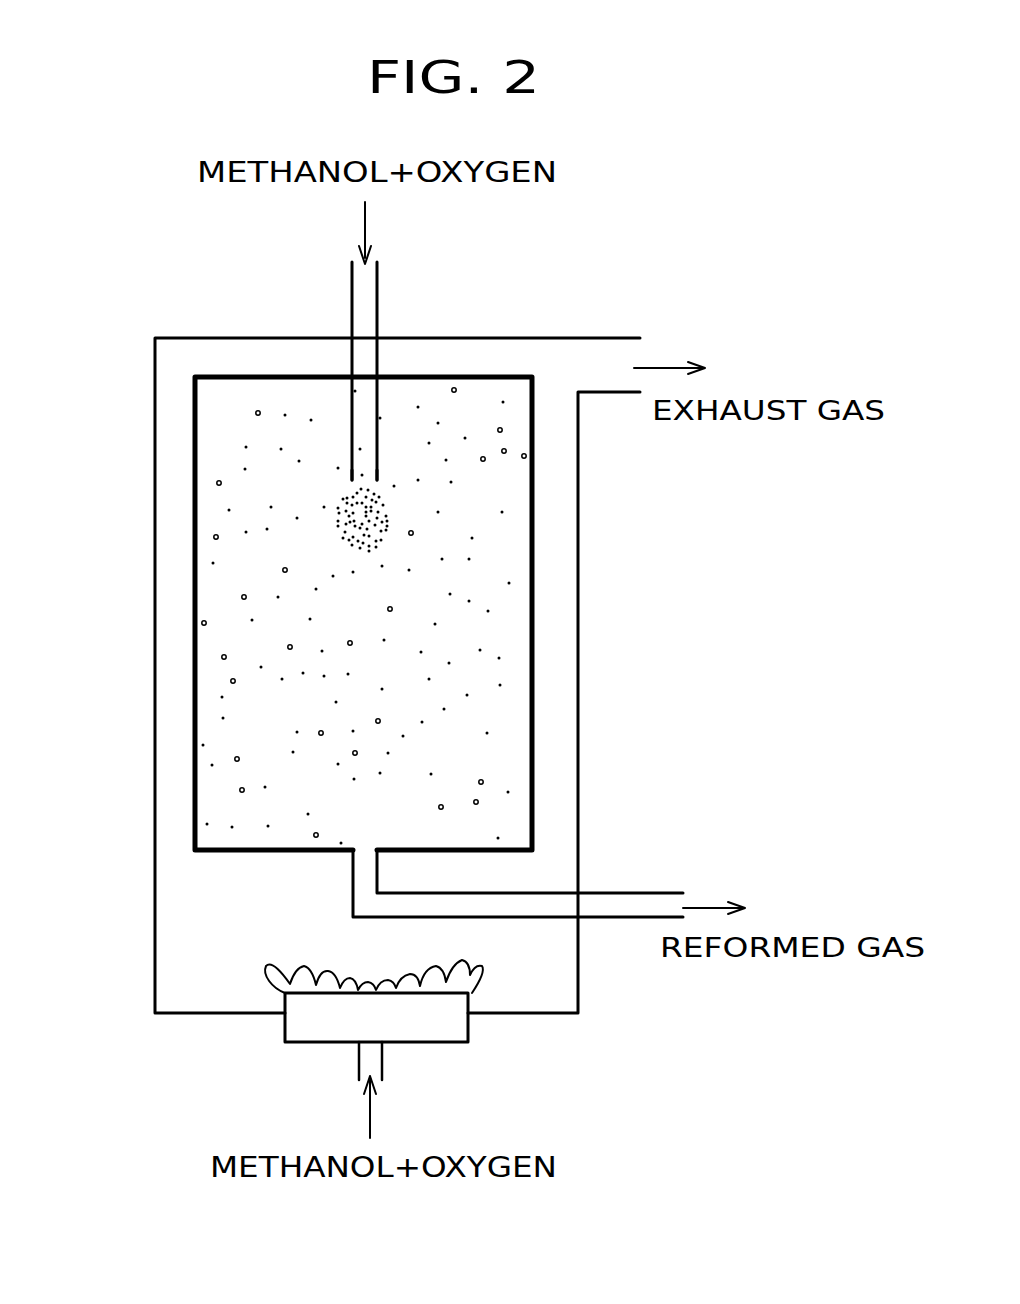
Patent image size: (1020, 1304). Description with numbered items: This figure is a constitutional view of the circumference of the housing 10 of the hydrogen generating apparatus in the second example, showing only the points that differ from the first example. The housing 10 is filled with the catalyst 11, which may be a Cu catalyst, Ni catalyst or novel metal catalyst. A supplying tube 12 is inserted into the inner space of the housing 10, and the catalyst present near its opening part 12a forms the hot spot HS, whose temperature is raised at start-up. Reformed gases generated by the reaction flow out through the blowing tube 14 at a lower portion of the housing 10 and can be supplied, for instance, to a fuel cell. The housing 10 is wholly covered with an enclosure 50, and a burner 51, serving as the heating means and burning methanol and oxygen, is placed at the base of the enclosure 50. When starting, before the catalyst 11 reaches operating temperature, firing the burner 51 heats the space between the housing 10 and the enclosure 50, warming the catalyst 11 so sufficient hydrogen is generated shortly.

The housing 10 is at (195, 530).
The catalyst 11 is at (231, 682).
The supplying tube 12 is at (368, 293).
The opening part 12a is at (352, 480).
The hot spot HS is at (340, 540).
The blowing tube 14 is at (656, 900).
The enclosure 50 is at (155, 853).
The burner 51 is at (283, 1027).